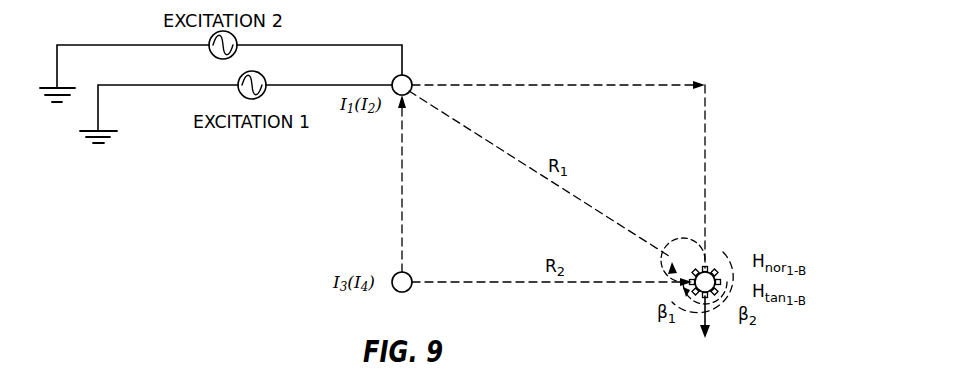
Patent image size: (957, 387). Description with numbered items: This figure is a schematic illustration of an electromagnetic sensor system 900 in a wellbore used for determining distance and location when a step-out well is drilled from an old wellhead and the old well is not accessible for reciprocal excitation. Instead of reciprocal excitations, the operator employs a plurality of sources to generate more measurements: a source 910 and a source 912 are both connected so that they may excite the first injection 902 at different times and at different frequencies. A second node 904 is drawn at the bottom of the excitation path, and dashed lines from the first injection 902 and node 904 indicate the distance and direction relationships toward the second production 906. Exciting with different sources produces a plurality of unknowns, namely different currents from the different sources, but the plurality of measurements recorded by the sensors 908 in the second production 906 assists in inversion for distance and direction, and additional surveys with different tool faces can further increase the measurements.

The electromagnetic sensor system 900 is at (700, 36).
The first injection 902 is at (410, 76).
The second conductor node 904 is at (409, 274).
The second production 906 is at (694, 268).
The sensors 908 is at (716, 270).
The source 910 is at (211, 56).
The source 912 is at (264, 74).